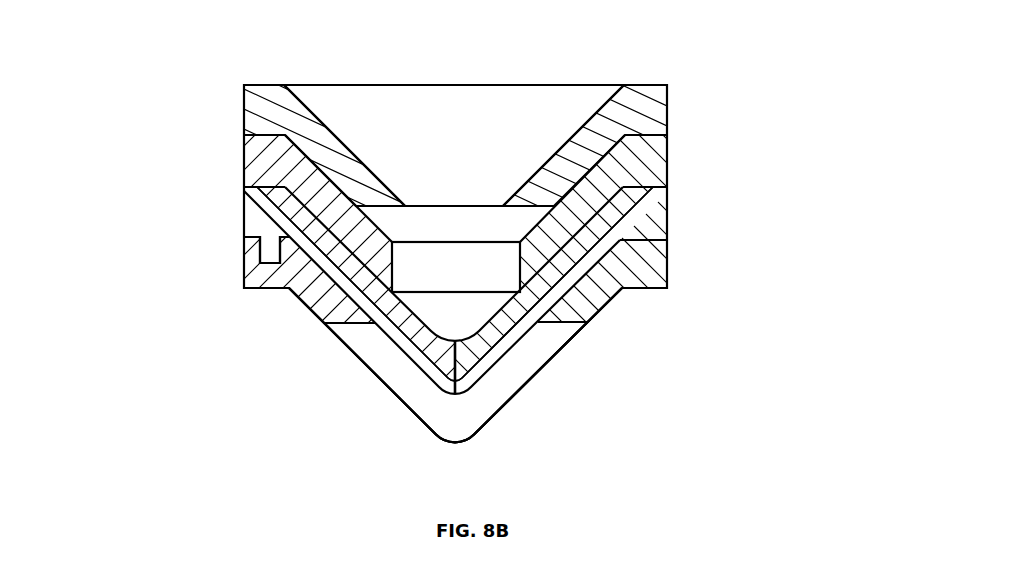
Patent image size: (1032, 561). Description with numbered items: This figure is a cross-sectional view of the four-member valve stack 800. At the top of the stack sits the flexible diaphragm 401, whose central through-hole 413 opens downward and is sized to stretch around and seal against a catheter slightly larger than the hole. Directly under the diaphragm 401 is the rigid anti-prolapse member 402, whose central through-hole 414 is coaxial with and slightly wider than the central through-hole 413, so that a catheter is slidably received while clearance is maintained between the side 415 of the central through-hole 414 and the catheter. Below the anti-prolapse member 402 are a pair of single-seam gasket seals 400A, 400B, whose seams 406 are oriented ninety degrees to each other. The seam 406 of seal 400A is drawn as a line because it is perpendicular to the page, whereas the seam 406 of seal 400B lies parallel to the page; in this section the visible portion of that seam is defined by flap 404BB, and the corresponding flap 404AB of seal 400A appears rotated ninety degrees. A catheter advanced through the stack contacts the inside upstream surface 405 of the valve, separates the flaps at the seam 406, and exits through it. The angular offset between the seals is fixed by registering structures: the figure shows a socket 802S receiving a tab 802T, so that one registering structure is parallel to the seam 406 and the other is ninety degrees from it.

The four-member valve stack 800 is at (838, 160).
The diaphragm 401 is at (244, 120).
The anti-prolapse member 402 is at (670, 163).
The central through-hole 413 is at (407, 205).
The side of the central through-hole 415 is at (469, 277).
The central through-hole 414 is at (445, 312).
The inside (upstream) surface 405 is at (445, 322).
The single-seam gasket seal 400A is at (668, 199).
The single-seam gasket seal 400B is at (303, 305).
The socket 802S is at (152, 250).
The tab 802T is at (278, 252).
The flap 404AB is at (503, 332).
The flap 404BB is at (565, 358).
The seam 406 is at (435, 375).